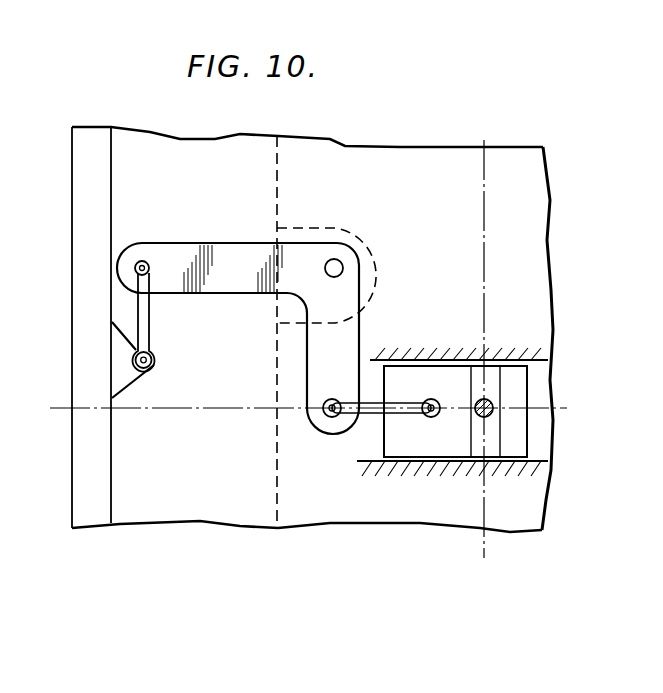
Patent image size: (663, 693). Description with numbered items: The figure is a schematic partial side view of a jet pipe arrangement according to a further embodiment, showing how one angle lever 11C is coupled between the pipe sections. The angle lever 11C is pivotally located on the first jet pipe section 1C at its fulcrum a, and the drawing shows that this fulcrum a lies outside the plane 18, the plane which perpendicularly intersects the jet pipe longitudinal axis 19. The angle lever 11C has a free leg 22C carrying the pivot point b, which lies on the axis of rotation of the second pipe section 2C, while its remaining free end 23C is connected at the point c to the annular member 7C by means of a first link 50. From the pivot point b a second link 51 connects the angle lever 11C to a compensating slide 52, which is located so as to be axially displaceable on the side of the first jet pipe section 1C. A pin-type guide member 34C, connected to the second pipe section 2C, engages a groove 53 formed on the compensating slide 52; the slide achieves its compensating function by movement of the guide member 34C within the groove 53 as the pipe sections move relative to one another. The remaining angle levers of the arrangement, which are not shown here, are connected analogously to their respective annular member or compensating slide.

The annular member 7C is at (111, 488).
The first jet pipe section 1C is at (229, 521).
The second pipe section 2C is at (358, 520).
The plane 18 is at (485, 235).
The jet pipe longitudinal axis 19 is at (207, 408).
The angle lever 11C is at (306, 250).
The free leg of angle lever 22C is at (370, 330).
The remaining free end of angle lever 23C is at (222, 243).
The fulcrum a is at (325, 268).
The connection point c is at (151, 265).
The first link 50 is at (148, 328).
The pivot point b is at (332, 398).
The second link 51 is at (365, 418).
The compensating slide 52 is at (496, 350).
The groove 53 is at (495, 441).
The pin-type guide member 34C is at (478, 414).